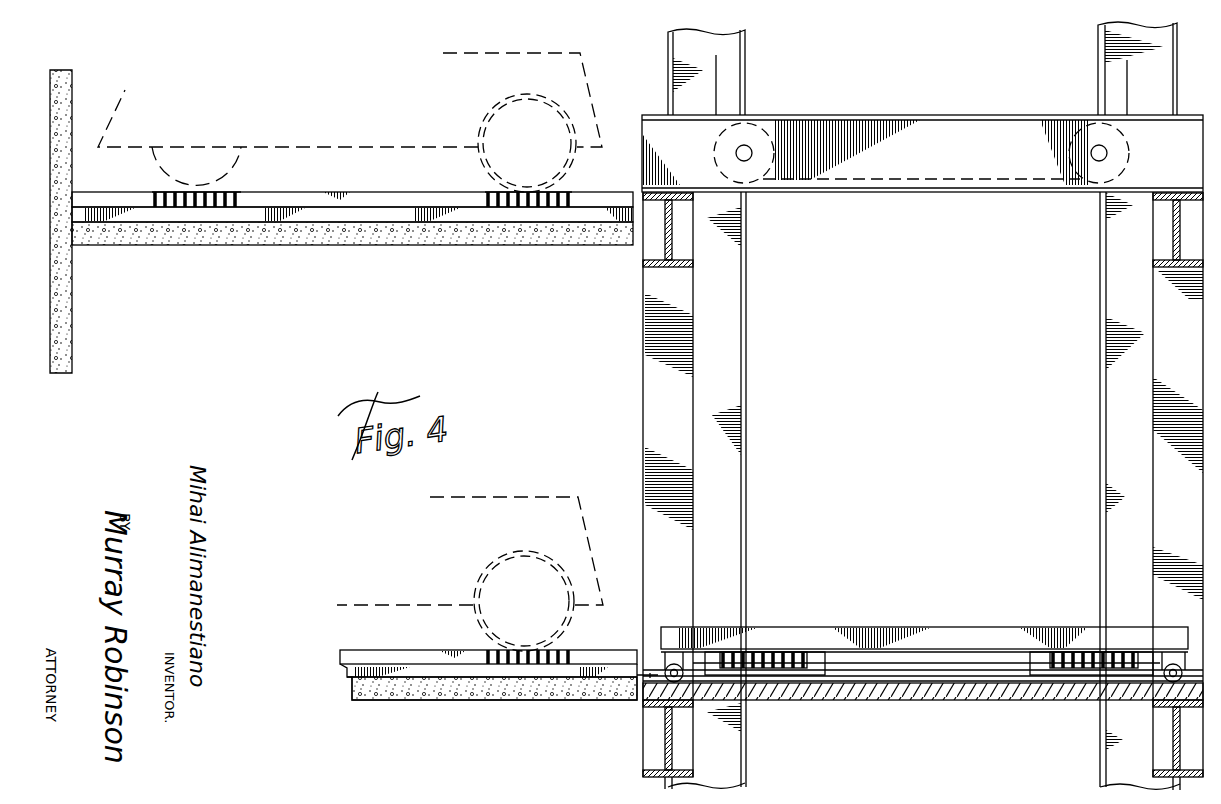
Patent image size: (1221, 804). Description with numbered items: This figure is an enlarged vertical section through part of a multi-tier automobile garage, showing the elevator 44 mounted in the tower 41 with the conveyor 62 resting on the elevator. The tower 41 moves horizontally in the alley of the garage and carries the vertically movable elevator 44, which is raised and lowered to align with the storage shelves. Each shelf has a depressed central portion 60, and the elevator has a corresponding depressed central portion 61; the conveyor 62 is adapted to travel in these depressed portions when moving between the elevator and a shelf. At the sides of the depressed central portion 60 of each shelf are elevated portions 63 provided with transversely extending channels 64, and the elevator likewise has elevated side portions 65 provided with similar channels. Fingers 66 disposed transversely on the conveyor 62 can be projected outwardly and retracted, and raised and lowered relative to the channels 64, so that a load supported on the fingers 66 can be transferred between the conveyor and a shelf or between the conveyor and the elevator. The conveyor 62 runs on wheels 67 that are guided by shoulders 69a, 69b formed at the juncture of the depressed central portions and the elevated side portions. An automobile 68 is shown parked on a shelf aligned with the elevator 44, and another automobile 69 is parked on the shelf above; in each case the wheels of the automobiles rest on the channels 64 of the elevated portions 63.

The tower 41 is at (732, 330).
The elevator 44 is at (778, 695).
The depressed central portion 60 is at (448, 672).
The depressed central portion 61 is at (870, 676).
The conveyor 62 is at (897, 627).
The elevated side portions 63 is at (378, 192).
The channels 64 is at (495, 192).
The elevated side portions 65 is at (953, 659).
The fingers 66 is at (770, 650).
The wheels 67 is at (674, 662).
The automobile 68 is at (508, 497).
The automobile 69 is at (495, 57).
The shoulder 69a is at (410, 668).
The shoulder 69b is at (650, 676).